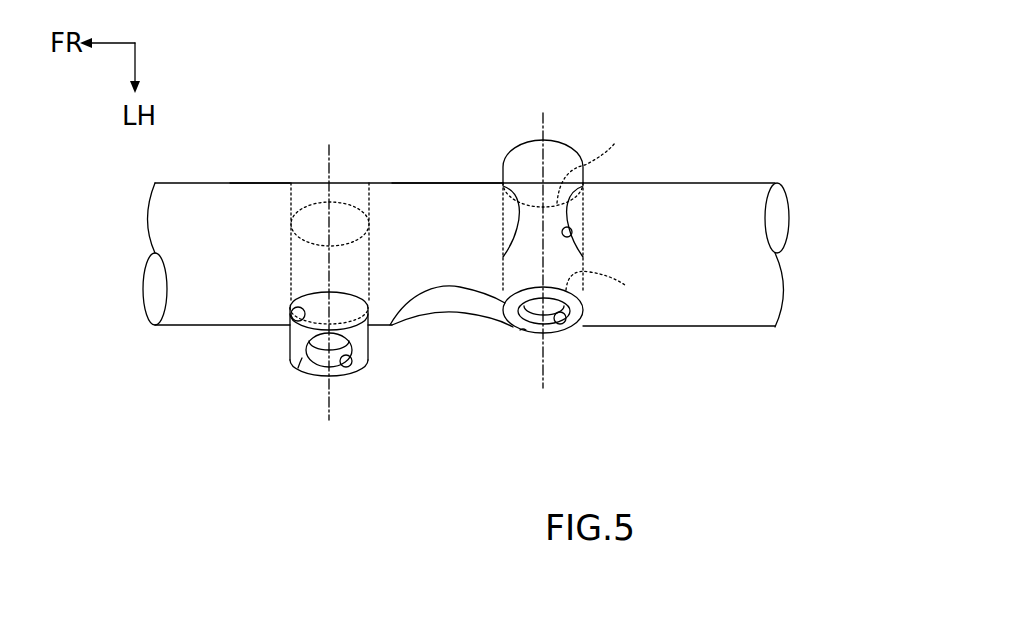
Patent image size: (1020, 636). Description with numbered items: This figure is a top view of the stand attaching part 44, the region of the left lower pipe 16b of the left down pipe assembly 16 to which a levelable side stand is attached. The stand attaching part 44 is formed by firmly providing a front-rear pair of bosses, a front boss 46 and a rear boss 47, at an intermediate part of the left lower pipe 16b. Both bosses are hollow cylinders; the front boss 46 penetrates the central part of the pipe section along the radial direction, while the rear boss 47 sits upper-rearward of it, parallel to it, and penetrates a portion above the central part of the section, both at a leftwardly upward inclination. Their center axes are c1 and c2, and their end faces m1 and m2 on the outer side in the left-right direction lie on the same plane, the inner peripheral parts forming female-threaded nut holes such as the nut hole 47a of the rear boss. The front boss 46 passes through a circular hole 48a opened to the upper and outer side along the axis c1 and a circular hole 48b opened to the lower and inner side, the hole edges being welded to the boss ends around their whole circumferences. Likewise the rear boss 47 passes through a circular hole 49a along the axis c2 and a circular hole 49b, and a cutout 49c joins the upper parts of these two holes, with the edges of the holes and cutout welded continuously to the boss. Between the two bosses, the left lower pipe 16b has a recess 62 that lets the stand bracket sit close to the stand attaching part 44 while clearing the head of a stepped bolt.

The left down pipe assembly 16 is at (205, 178).
The left lower pipe 16b is at (260, 192).
The stand attaching part 44 is at (450, 200).
The front boss 46 is at (292, 335).
The rear boss 47 is at (567, 158).
The nut hole 47a is at (563, 327).
The circular hole 48a is at (296, 322).
The circular hole 48b is at (353, 205).
The circular hole 49a is at (618, 286).
The circular hole 49b is at (603, 160).
The cutout 49c is at (575, 232).
The recess 62 is at (434, 305).
The end face m1 is at (300, 365).
The end face m2 is at (523, 328).
The center axis c1 is at (327, 402).
The center axis c2 is at (543, 370).